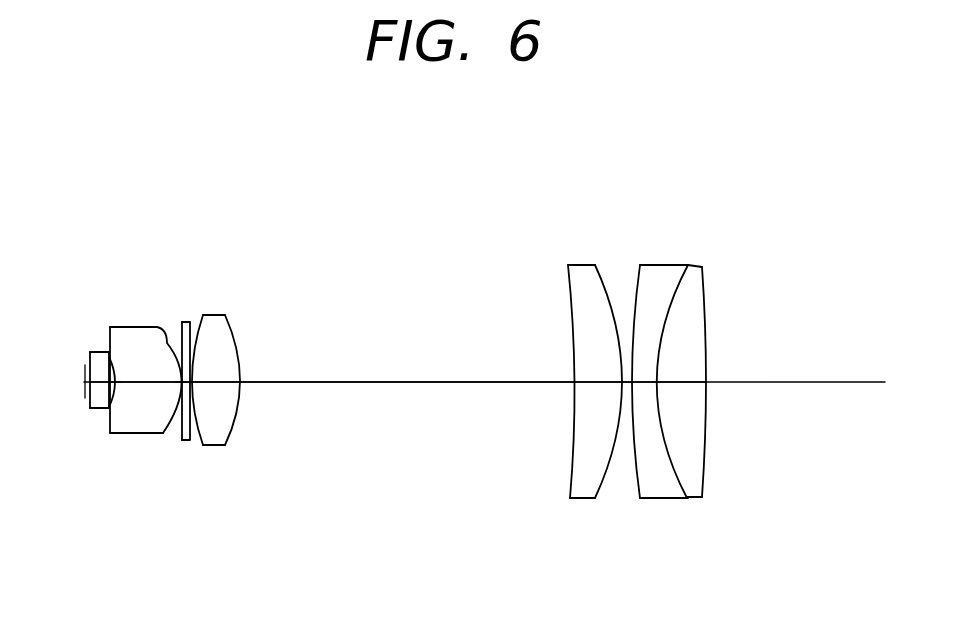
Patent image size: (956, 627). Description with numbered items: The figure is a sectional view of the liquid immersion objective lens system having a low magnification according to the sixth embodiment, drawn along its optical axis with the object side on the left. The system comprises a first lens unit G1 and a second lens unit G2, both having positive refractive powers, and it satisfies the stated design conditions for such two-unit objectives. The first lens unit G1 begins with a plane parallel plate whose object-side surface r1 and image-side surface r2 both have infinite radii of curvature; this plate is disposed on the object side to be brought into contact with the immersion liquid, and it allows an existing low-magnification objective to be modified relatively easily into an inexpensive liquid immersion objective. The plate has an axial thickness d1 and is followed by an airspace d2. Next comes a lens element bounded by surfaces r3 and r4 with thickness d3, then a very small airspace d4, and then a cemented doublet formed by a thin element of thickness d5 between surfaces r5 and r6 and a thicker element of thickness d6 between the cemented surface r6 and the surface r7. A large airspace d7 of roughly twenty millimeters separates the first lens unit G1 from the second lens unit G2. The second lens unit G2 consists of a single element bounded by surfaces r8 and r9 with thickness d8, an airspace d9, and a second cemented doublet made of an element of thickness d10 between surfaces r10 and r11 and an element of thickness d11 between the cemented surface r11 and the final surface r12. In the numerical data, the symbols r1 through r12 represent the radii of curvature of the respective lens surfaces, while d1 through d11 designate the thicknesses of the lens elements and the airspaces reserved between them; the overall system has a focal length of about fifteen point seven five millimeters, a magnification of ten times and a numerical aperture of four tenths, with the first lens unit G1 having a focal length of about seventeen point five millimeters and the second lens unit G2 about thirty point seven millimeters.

The first lens surface r1 is at (88, 352).
The second lens surface r2 is at (106, 355).
The third lens surface r3 is at (117, 352).
The fourth lens surface r4 is at (157, 327).
The fifth lens surface r5 is at (179, 323).
The sixth lens surface r6 is at (193, 322).
The seventh lens surface r7 is at (232, 314).
The eighth lens surface r8 is at (568, 299).
The ninth lens surface r9 is at (603, 280).
The tenth lens surface r10 is at (640, 266).
The eleventh lens surface r11 is at (676, 288).
The twelfth lens surface r12 is at (706, 300).
The thickness of first lens element d1 is at (98, 395).
The airspace between first and second lens elements d2 is at (119, 392).
The thickness of second lens element d3 is at (137, 384).
The airspace between second and third lens elements d4 is at (178, 388).
The thickness of third lens element d5 is at (188, 384).
The thickness of fourth lens element d6 is at (227, 384).
The airspace between first and second lens units d7 is at (363, 384).
The thickness of fifth lens element d8 is at (597, 384).
The airspace between fifth and sixth lens elements d9 is at (625, 384).
The thickness of sixth lens element d10 is at (647, 384).
The thickness of seventh lens element d11 is at (690, 384).
The first lens unit G1 is at (161, 404).
The second lens unit G2 is at (639, 378).